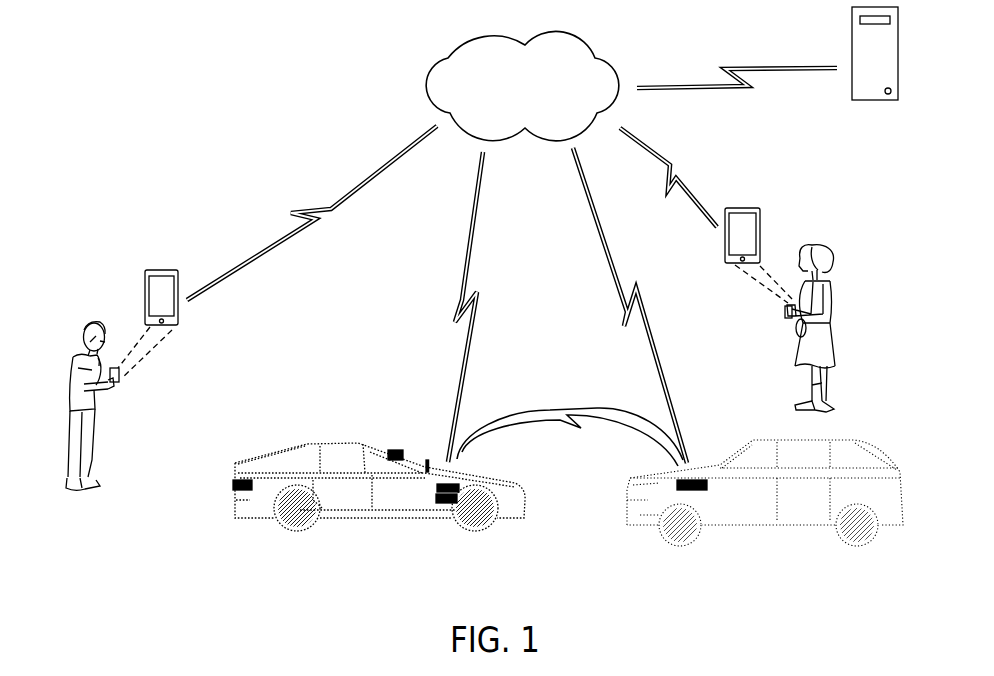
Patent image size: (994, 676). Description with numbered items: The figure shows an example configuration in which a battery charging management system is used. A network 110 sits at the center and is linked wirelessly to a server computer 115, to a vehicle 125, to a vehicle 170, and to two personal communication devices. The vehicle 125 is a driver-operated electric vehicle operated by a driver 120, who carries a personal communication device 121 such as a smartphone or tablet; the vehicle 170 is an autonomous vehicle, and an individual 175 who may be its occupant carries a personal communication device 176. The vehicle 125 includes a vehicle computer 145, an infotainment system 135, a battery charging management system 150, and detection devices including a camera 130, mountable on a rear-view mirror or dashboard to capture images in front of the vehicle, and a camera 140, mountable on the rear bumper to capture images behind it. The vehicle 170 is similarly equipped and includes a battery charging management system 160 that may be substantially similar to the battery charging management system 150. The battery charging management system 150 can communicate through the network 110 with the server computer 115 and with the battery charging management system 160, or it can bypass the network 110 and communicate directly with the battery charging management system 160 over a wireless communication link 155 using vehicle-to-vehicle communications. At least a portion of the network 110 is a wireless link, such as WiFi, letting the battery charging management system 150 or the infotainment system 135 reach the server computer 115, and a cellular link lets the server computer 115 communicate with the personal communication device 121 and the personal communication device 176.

The network 110 is at (522, 85).
The server computer 115 is at (898, 55).
The driver 120 is at (52, 358).
The personal communication device 121 is at (148, 300).
The vehicle 125 is at (268, 436).
The camera 130 is at (401, 448).
The infotainment system 135 is at (428, 458).
The camera 140 is at (231, 487).
The vehicle computer 145 is at (435, 488).
The battery charging management system 150 is at (444, 506).
The wireless communication link 155 is at (572, 395).
The battery charging management system 160 is at (702, 493).
The vehicle 170 is at (873, 441).
The individual 175 is at (848, 294).
The personal communication device 176 is at (760, 240).